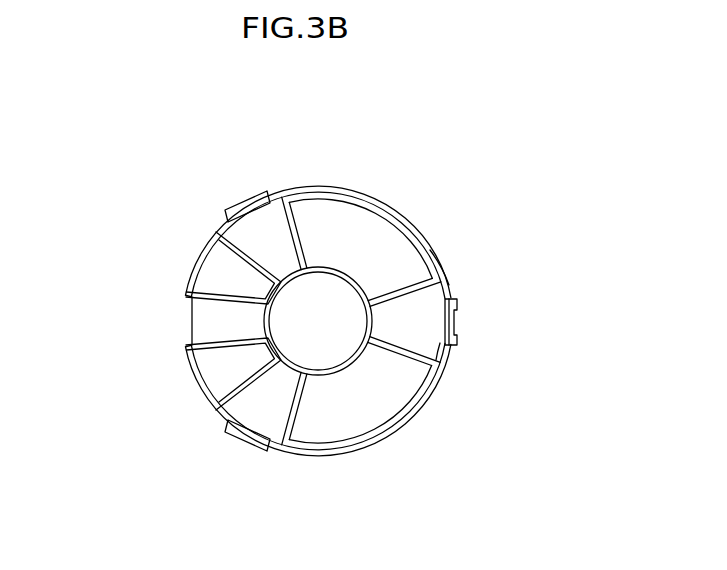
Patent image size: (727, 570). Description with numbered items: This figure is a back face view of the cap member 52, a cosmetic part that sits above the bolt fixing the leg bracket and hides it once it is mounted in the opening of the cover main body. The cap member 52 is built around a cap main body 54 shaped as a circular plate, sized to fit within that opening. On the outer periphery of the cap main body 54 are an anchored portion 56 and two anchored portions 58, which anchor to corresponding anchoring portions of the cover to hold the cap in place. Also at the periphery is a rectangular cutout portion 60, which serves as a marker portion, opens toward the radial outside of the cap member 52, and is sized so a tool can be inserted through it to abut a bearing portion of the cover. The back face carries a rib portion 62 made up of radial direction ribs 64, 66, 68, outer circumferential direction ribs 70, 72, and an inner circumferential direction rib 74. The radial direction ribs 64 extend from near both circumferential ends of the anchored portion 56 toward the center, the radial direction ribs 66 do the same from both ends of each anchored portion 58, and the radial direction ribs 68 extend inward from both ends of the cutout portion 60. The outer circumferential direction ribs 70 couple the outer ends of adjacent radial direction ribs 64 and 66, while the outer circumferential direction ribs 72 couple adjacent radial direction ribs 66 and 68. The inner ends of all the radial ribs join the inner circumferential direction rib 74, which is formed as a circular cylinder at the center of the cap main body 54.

The cap member 52 is at (460, 192).
The cap main body 54 is at (449, 293).
The anchored portion 56 is at (458, 333).
The anchored portion 58 is at (250, 190).
The cutout portion 60 is at (191, 333).
The rib portion 62 is at (432, 345).
The radial direction rib 64 is at (400, 290).
The radial direction rib 66 is at (285, 240).
The radial direction rib 68 is at (192, 333).
The outer circumferential direction rib 70 is at (360, 192).
The outer circumferential direction rib 72 is at (200, 262).
The inner circumferential direction rib 74 is at (273, 300).